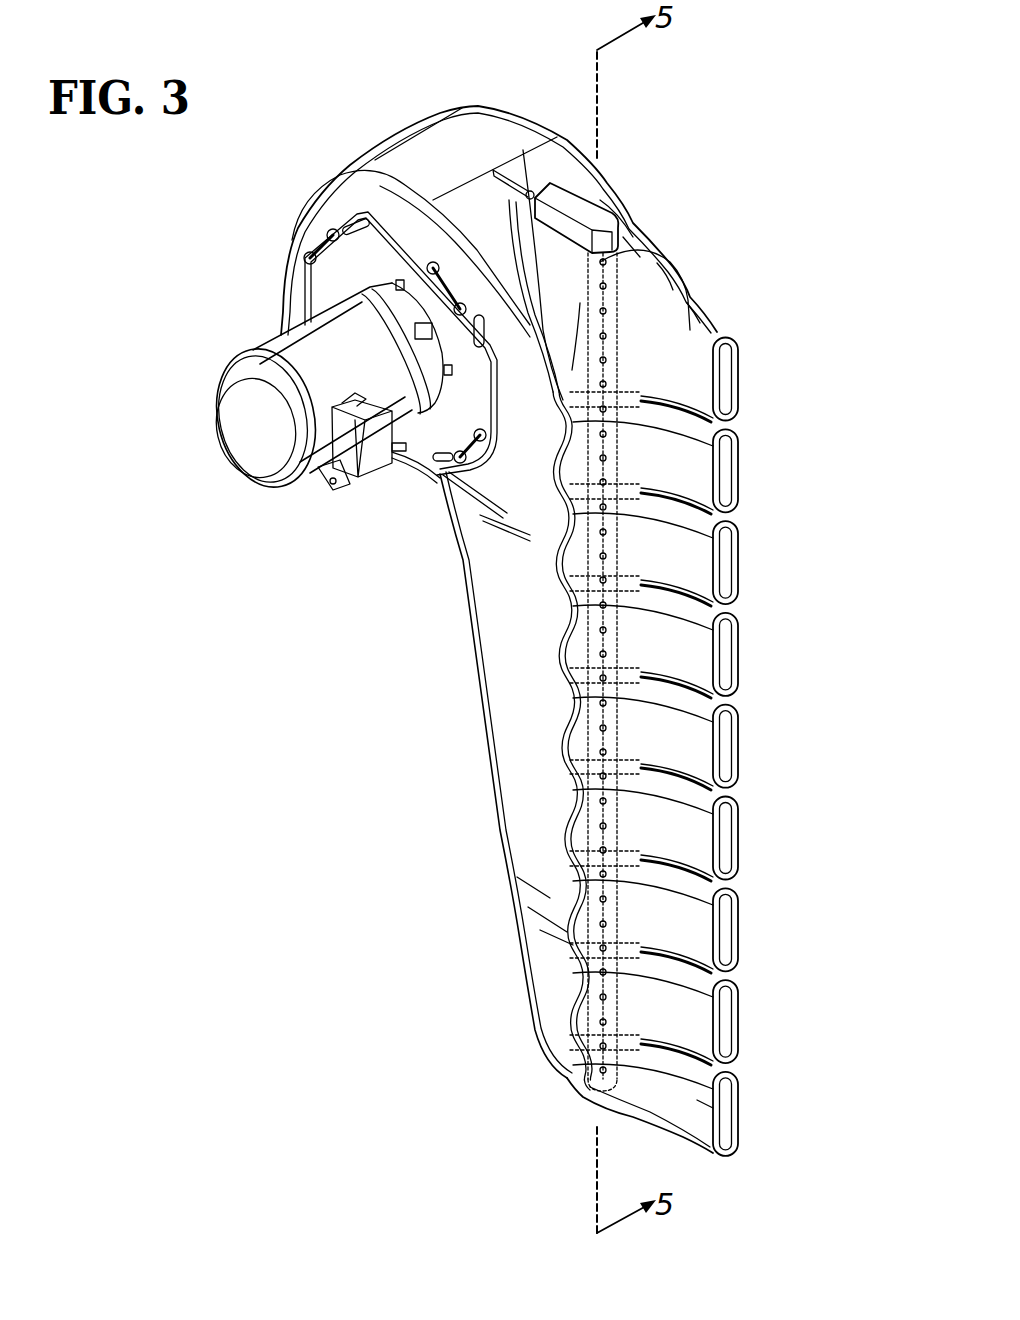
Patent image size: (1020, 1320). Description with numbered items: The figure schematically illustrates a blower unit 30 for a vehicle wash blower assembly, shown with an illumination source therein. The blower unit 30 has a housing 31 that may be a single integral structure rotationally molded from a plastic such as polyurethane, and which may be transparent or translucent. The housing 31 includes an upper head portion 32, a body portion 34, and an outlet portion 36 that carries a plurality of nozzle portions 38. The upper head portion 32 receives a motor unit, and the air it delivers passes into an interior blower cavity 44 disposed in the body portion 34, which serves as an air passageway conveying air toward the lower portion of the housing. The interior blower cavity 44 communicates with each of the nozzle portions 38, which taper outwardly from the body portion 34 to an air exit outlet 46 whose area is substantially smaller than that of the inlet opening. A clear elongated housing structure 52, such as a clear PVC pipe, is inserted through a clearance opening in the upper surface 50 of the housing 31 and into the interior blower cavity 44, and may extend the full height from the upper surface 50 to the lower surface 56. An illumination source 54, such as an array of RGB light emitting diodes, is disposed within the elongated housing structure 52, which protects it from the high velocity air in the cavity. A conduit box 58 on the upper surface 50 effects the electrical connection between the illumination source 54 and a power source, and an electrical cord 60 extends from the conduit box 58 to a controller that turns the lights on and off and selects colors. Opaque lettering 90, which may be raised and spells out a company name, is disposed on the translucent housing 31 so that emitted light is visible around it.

The blower unit 30 is at (724, 290).
The housing 31 is at (677, 260).
The upper head portion 32 is at (462, 130).
The body portion 34 is at (505, 752).
The outlet portion 36 is at (608, 1102).
The nozzle portions 38 is at (790, 1092).
The interior blower cavity 44 is at (490, 689).
The air exit outlet 46 is at (742, 910).
The upper surface 50 is at (633, 237).
The elongated housing structure 52 is at (632, 712).
The illumination source 54 is at (600, 848).
The lower surface 56 is at (557, 1043).
The conduit box 58 is at (602, 216).
The electrical cord 60 is at (505, 172).
The opaque lettering 90 is at (520, 735).